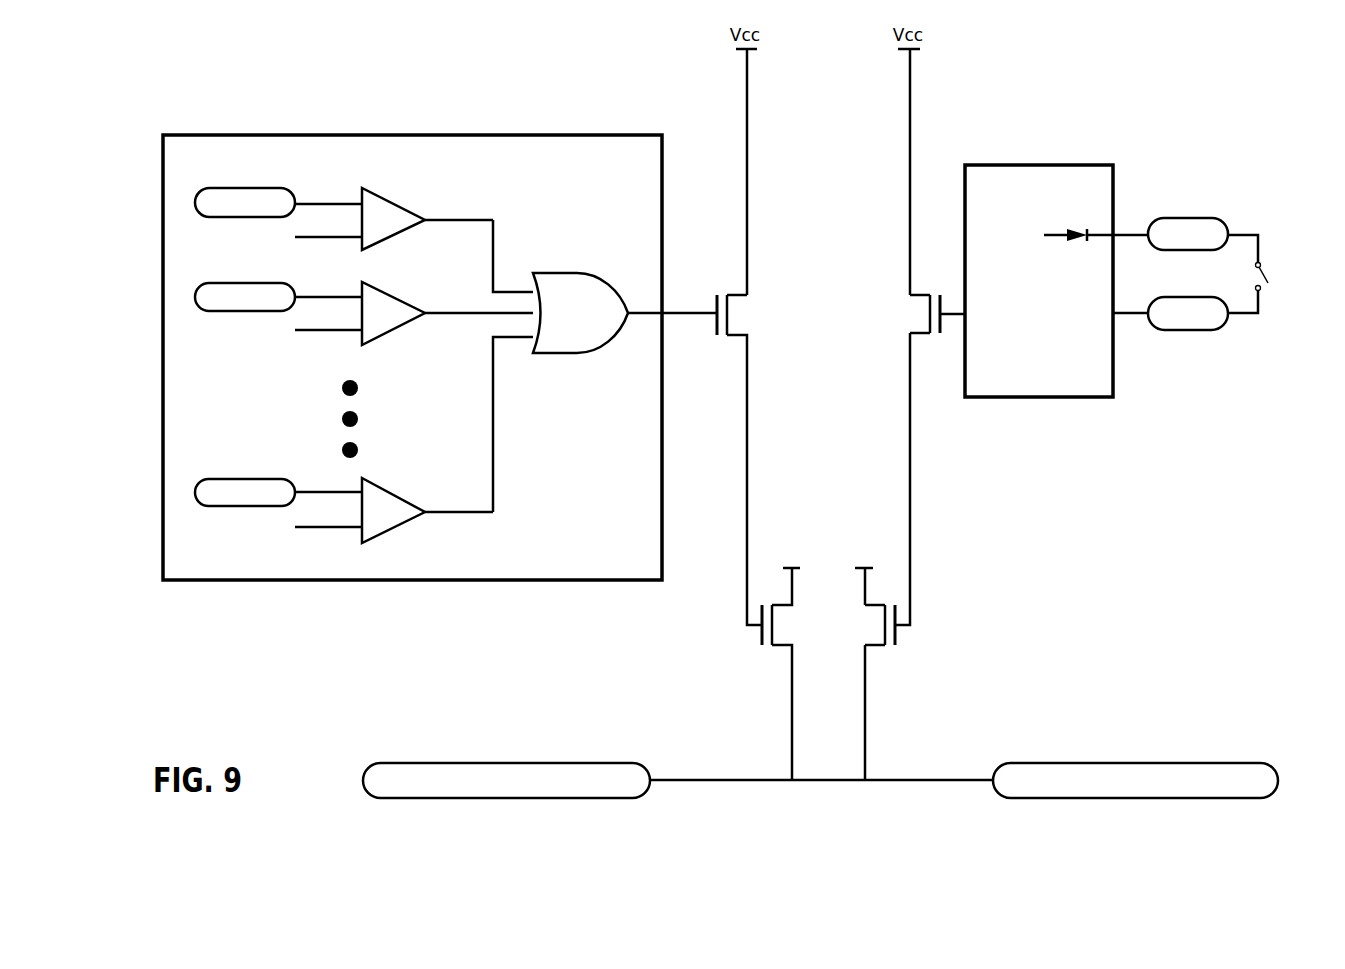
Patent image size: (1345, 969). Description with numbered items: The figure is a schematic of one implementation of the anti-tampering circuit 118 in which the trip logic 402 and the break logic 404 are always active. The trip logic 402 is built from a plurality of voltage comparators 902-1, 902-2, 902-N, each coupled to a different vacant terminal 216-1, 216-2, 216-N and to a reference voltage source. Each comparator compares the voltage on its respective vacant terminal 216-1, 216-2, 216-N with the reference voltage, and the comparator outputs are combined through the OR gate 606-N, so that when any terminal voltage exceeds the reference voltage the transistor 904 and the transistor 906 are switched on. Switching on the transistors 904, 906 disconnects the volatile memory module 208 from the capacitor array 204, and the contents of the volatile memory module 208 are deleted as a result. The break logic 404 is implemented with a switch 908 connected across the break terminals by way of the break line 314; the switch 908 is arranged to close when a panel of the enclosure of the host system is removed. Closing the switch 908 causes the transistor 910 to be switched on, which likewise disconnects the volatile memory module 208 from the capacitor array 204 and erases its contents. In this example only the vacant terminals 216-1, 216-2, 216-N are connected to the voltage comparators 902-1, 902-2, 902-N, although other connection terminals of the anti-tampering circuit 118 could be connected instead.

The anti-tampering circuit 118 is at (1112, 66).
The capacitor array 204 is at (615, 763).
The volatile memory module 208 is at (1210, 763).
The vacant terminal 216-1 is at (232, 188).
The vacant terminal 216-2 is at (232, 283).
The vacant terminal 216-N is at (232, 479).
The break line 314 is at (1258, 235).
The trip logic 402 is at (590, 135).
The break logic 404 is at (1093, 165).
The OR gate 606-N is at (577, 273).
The voltage comparator 902-1 is at (388, 201).
The voltage comparator 902-2 is at (388, 295).
The voltage comparator 902-N is at (388, 491).
The transistor 904 is at (741, 292).
The transistor 906 is at (780, 648).
The switch 908 is at (1268, 283).
The transistor 910 is at (921, 331).